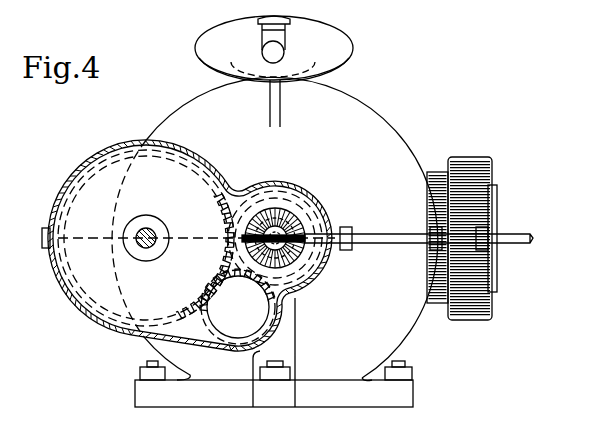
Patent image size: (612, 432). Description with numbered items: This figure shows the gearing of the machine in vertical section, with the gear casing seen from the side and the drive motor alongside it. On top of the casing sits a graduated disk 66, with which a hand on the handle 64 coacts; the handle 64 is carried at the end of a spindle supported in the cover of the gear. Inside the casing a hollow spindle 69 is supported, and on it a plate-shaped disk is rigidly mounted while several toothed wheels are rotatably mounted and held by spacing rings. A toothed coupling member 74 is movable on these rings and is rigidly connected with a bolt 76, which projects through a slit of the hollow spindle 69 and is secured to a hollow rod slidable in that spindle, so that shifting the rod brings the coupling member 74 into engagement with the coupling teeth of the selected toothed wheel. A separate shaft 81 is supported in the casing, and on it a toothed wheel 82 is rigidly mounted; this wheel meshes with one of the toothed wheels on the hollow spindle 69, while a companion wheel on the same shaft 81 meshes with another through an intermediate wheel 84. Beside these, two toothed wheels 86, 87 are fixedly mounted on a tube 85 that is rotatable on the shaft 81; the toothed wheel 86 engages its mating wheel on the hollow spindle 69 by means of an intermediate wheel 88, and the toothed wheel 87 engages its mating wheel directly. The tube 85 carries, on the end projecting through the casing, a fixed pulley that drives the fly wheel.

The handle 64 is at (285, 52).
The graduated disk 66 is at (203, 57).
The hollow spindle 69 is at (298, 212).
The coupling member 74 is at (278, 205).
The bolt 76 is at (318, 255).
The shaft 81 is at (156, 235).
The toothed wheel 82 is at (187, 165).
The toothed wheel 87 is at (187, 165).
The toothed wheel 86 is at (92, 297).
The tube 85 is at (92, 297).
The intermediate wheel 84 is at (230, 328).
The intermediate wheel 88 is at (230, 328).